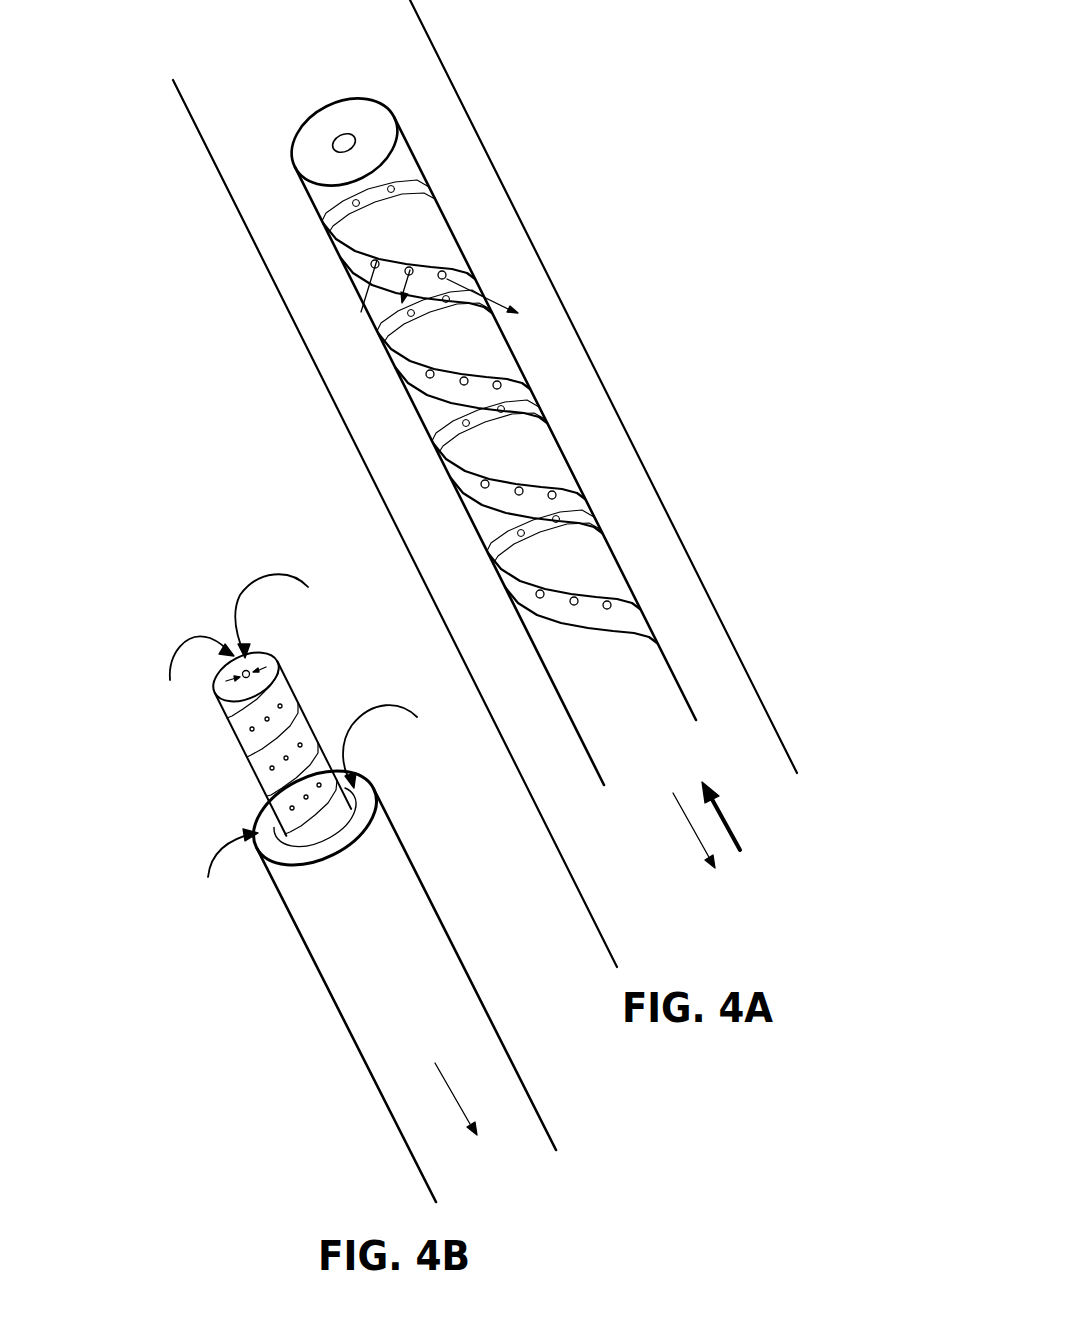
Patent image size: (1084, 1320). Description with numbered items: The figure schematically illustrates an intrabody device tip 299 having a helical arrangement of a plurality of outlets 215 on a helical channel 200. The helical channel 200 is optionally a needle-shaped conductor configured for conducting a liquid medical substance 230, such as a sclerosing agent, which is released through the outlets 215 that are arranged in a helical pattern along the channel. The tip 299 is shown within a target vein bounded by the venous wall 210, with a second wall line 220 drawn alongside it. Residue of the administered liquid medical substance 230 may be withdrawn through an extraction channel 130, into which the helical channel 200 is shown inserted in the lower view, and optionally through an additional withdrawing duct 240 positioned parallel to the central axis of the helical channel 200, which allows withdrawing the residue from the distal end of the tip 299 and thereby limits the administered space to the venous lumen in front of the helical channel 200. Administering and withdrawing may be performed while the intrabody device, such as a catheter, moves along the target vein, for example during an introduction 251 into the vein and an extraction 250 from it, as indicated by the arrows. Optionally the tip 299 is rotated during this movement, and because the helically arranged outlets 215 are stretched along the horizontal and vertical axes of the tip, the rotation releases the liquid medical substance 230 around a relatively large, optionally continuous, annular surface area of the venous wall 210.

In FIG. 4B, the extraction channel 130 is at (413, 855).
In FIG. 4A, the helical channel 200 is at (447, 217).
In FIG. 4B, the helical channel 200 is at (230, 728).
In FIG. 4A, the venous wall 210 is at (450, 78).
In FIG. 4A, the outlets 215 is at (343, 253).
In FIG. 4A, the second wall 220 is at (395, 523).
In FIG. 4A, the liquid medical substance 230 is at (355, 313).
In FIG. 4A, the additional withdrawing duct 240 is at (332, 124).
In FIG. 4B, the additional withdrawing duct 240 is at (249, 660).
In FIG. 4A, the extraction 250 is at (693, 838).
In FIG. 4A, the introduction 251 is at (728, 796).
In FIG. 4A, the intrabody device tip 299 is at (255, 110).
In FIG. 4B, the intrabody device tip 299 is at (208, 598).